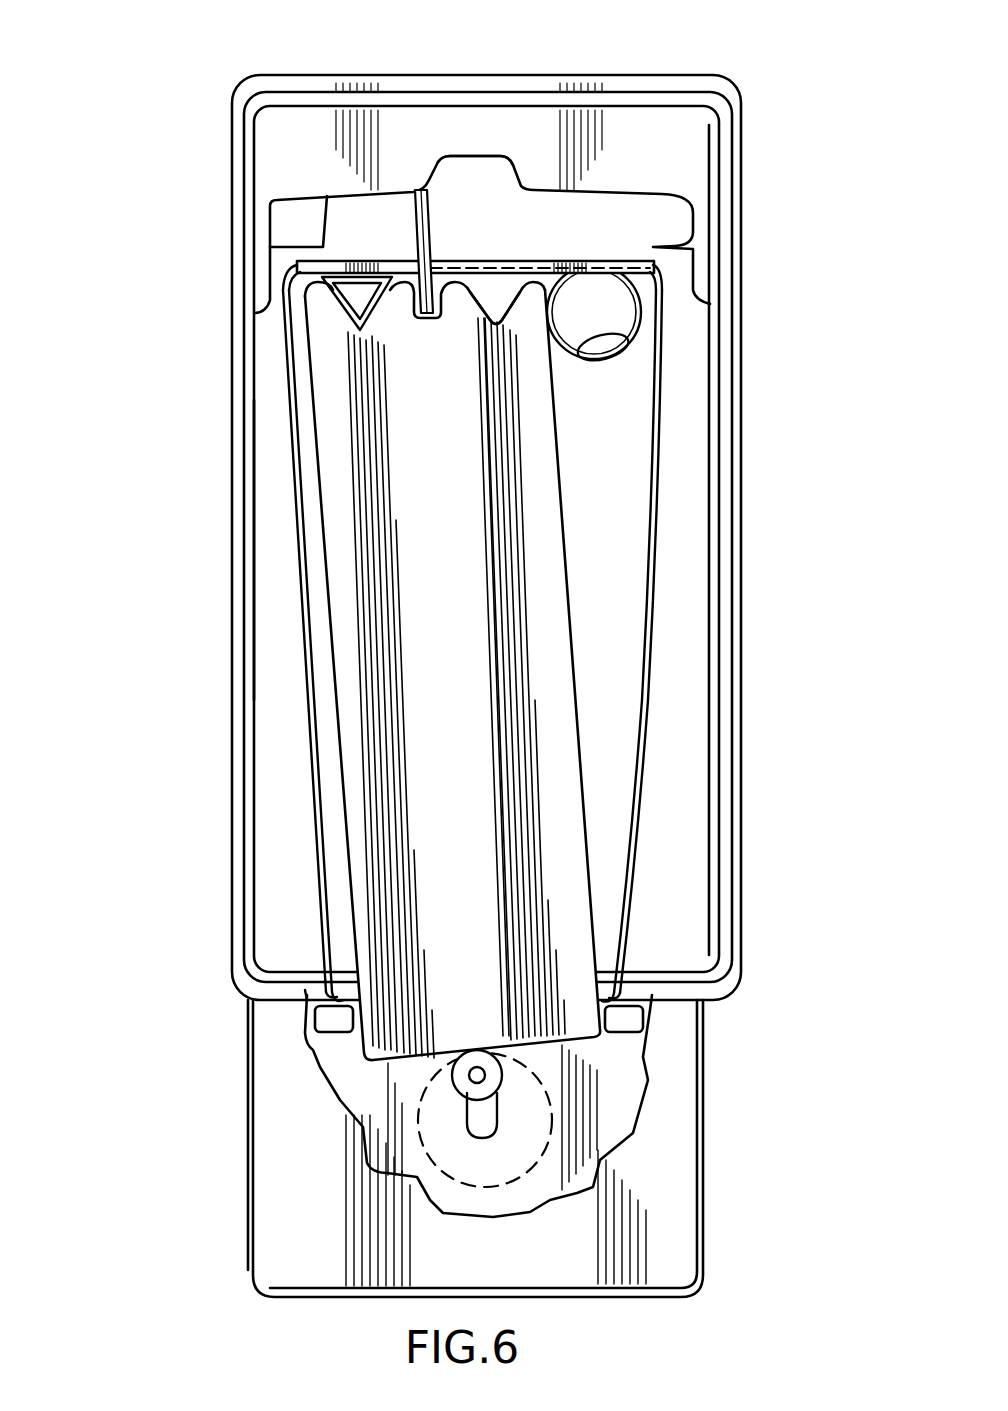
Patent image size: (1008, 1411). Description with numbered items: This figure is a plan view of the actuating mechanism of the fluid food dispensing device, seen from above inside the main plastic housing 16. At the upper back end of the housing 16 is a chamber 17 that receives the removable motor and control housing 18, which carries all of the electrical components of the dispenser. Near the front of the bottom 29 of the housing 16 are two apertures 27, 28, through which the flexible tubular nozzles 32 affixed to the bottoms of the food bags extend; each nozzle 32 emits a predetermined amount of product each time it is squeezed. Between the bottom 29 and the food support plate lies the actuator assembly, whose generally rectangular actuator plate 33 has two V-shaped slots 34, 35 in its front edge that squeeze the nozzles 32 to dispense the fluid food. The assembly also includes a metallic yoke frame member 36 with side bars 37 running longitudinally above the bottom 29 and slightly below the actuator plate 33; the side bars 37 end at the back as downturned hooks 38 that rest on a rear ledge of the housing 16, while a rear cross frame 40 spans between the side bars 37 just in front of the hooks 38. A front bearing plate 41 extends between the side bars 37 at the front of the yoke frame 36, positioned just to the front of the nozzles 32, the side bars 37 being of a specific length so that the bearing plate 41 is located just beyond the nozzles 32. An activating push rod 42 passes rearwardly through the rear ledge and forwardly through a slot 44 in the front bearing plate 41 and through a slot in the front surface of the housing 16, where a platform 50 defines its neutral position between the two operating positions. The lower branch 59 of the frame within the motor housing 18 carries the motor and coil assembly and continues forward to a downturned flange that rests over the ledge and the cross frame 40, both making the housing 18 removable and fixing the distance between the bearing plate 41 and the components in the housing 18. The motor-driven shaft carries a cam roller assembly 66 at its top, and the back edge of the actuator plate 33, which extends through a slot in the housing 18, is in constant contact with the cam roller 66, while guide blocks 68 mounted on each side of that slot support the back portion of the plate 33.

The main plastic housing 16 is at (745, 142).
The chamber 17 is at (290, 1172).
The motor and control housing 18 is at (627, 1117).
The aperture 27 is at (636, 346).
The aperture 28 is at (271, 300).
The bottom 29 is at (283, 557).
The nozzle 32 is at (636, 343).
The actuator plate 33 is at (333, 423).
The V-shaped slot 34 is at (493, 262).
The V-shaped slot 35 is at (358, 265).
The yoke frame member 36 is at (646, 755).
The side bar 37 is at (307, 690).
The downturned hook 38 is at (305, 990).
The rear cross frame 40 is at (330, 897).
The front bearing plate 41 is at (308, 266).
The activating push rod 42 is at (417, 190).
The slot 44 is at (458, 262).
The platform 50 is at (507, 160).
The lower branch 59 is at (330, 1058).
The cam roller assembly 66 is at (493, 1083).
The guide block 68 is at (318, 1015).